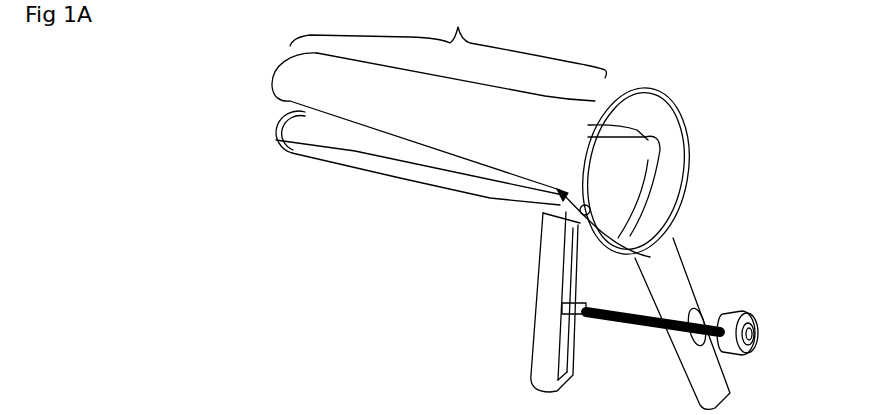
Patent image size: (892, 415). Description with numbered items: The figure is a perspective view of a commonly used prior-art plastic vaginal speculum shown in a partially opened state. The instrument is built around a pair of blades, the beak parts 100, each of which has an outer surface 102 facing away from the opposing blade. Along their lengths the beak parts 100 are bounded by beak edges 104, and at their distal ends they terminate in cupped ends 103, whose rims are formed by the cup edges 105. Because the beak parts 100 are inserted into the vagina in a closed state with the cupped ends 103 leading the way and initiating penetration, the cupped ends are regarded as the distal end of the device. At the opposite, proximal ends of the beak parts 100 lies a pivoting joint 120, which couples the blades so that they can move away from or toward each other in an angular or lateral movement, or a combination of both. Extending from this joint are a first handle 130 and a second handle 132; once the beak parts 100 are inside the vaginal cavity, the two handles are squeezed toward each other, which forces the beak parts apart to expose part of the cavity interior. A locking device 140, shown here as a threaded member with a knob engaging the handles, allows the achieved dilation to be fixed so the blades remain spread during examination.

The beak parts 100 is at (448, 46).
The outer surface 102 is at (447, 182).
The cupped ends 103 is at (309, 158).
The beak edges 104 is at (354, 152).
The cup edges 105 is at (276, 129).
The pivoting joint 120 is at (591, 208).
The first handle 130 is at (547, 283).
The second handle 132 is at (670, 277).
The locking device 140 is at (757, 311).